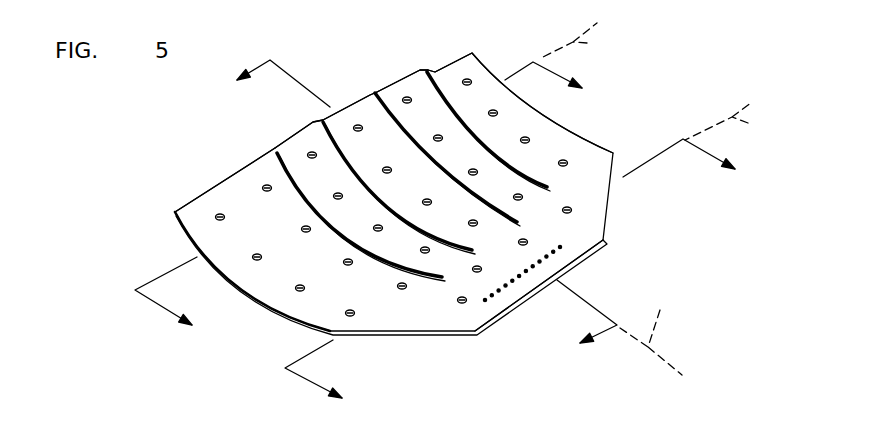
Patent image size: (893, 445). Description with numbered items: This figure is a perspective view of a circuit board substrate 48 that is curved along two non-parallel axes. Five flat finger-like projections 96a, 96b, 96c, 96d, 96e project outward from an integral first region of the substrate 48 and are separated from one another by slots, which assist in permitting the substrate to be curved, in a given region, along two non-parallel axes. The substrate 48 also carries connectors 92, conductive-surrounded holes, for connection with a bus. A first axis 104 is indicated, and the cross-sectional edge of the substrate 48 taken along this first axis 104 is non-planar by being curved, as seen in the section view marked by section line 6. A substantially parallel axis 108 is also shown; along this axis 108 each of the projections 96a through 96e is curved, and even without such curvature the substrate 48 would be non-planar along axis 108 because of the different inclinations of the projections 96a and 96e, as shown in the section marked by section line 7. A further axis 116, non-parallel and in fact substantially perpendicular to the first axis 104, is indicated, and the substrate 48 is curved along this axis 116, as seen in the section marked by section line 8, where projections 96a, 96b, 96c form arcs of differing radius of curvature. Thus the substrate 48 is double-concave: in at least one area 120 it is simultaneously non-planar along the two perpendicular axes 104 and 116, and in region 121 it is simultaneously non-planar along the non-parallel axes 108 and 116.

The circuit board substrate 48 is at (598, 215).
The finger-like projection 96a is at (236, 190).
The finger-like projection 96b is at (288, 140).
The finger-like projection 96c is at (348, 108).
The finger-like projection 96d is at (399, 80).
The finger-like projection 96e is at (476, 62).
The region 121 is at (403, 190).
The connectors 92 is at (485, 300).
The area 120 is at (470, 285).
The axis 108 is at (587, 43).
The first axis 104 is at (748, 123).
The axis 116 is at (660, 310).
The section line 6- 6 is at (519, 278).
The section line 7- 7 is at (367, 198).
The section line 8- 8 is at (417, 211).